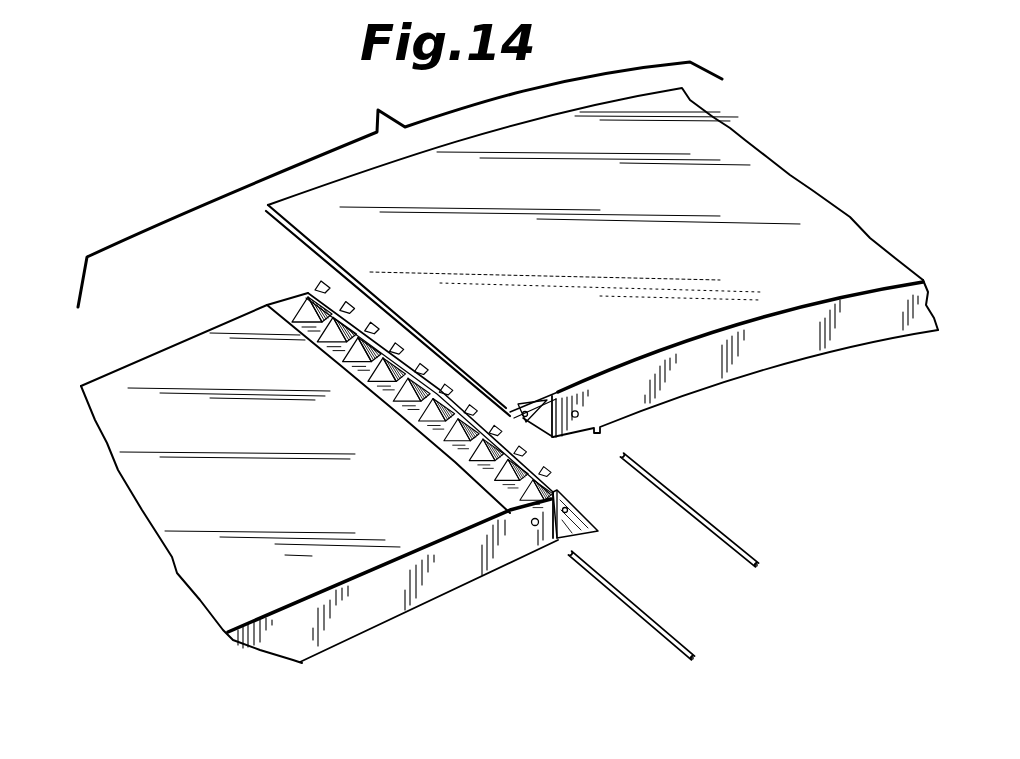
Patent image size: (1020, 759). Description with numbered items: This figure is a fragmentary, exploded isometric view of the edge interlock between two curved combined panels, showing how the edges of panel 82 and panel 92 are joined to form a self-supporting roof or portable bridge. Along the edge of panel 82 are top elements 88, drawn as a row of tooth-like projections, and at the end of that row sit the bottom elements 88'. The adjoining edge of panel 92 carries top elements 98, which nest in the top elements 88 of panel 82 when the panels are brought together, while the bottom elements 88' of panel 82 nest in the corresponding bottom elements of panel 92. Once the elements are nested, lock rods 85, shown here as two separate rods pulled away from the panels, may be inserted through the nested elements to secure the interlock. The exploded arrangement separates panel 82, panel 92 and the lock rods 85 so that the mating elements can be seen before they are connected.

The panel 92 is at (602, 191).
The panel 82 is at (273, 495).
The top elements 88 is at (410, 397).
The bottom elements 88' is at (596, 514).
The top elements 98 is at (524, 416).
The lock rods 85 is at (638, 602).